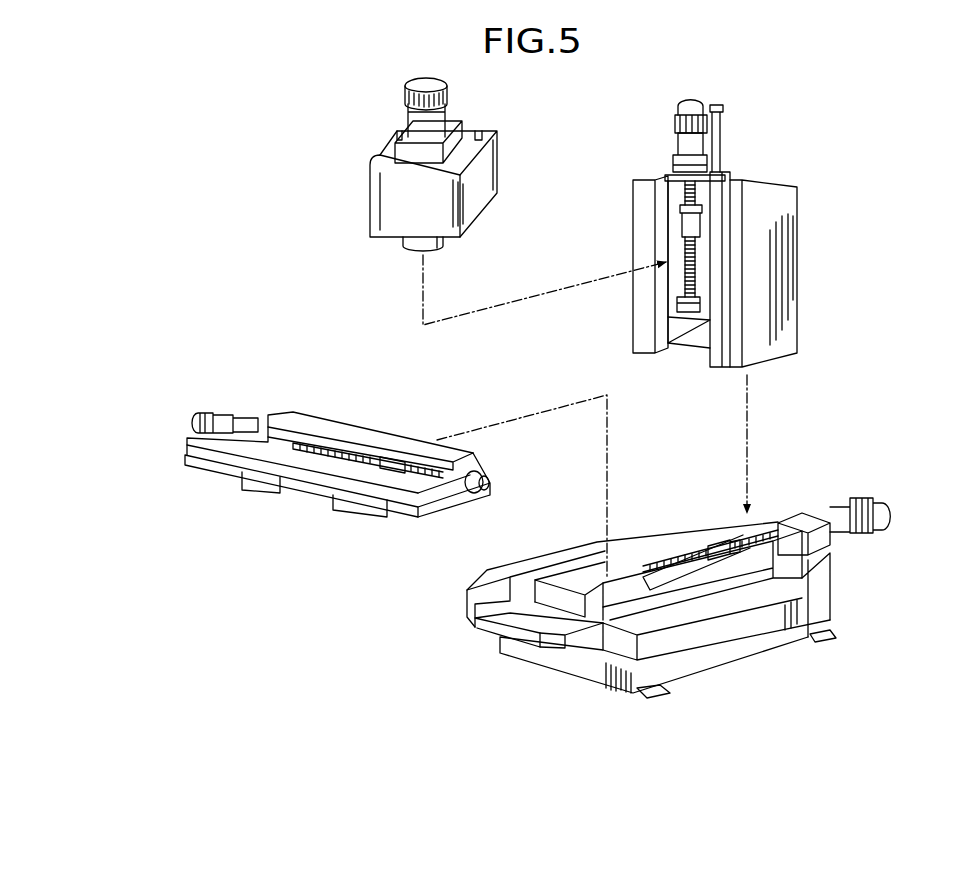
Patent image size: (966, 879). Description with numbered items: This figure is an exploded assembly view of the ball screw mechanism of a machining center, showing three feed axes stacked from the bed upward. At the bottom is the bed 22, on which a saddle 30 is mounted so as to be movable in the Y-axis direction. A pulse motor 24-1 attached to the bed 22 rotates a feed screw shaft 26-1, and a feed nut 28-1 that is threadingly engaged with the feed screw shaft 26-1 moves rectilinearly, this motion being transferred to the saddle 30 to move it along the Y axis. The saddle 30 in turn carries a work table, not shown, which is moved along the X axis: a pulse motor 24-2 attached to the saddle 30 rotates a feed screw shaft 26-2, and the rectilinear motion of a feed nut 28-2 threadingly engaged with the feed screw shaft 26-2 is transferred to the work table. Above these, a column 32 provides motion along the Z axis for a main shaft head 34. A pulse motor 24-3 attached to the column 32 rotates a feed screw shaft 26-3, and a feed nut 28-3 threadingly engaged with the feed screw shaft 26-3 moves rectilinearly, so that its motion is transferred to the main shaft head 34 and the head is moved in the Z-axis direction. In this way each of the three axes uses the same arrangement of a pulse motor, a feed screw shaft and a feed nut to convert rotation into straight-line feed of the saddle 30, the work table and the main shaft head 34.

The bed 22 is at (720, 668).
The pulse motor 24-1 is at (890, 515).
The feed screw shaft 26-1 is at (680, 543).
The feed nut 28-1 is at (720, 547).
The saddle 30 is at (347, 503).
The pulse motor 24-2 is at (203, 412).
The feed screw shaft 26-2 is at (317, 443).
The feed nut 28-2 is at (388, 460).
The column 32 is at (773, 246).
The pulse motor 24-3 is at (684, 138).
The feed screw shaft 26-3 is at (686, 272).
The feed nut 28-3 is at (683, 222).
The main shaft head 34 is at (385, 120).